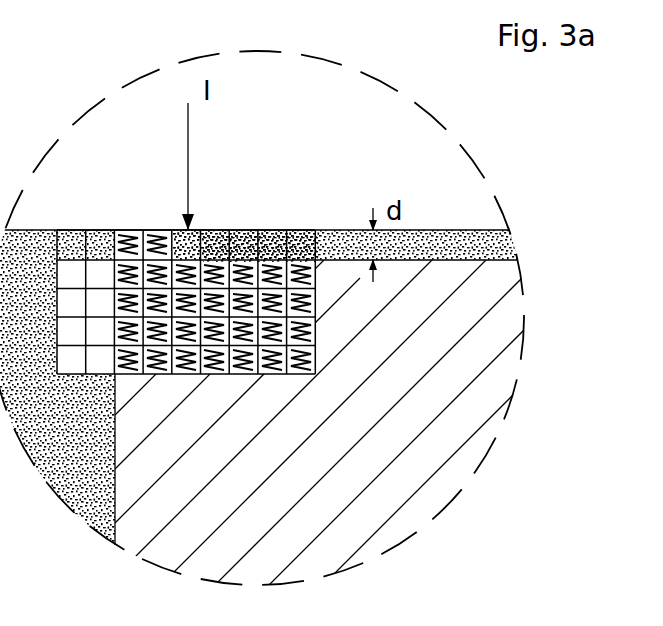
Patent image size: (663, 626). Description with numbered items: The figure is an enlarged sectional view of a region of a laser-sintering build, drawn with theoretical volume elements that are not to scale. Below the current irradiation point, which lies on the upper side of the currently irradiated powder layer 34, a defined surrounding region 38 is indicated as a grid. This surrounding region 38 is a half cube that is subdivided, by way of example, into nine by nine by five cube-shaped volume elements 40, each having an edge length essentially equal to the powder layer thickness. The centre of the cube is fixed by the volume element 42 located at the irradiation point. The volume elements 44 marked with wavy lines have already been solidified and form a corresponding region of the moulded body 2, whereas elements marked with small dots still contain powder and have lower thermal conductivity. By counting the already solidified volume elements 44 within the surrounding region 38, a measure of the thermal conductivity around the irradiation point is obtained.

The moulded body 2 is at (187, 493).
The layer 34 is at (458, 243).
The surrounding region 38 is at (315, 303).
The volume elements 40 is at (302, 363).
The volume element at the irradiation point 42 is at (210, 229).
The solidified volume elements 44 is at (165, 363).